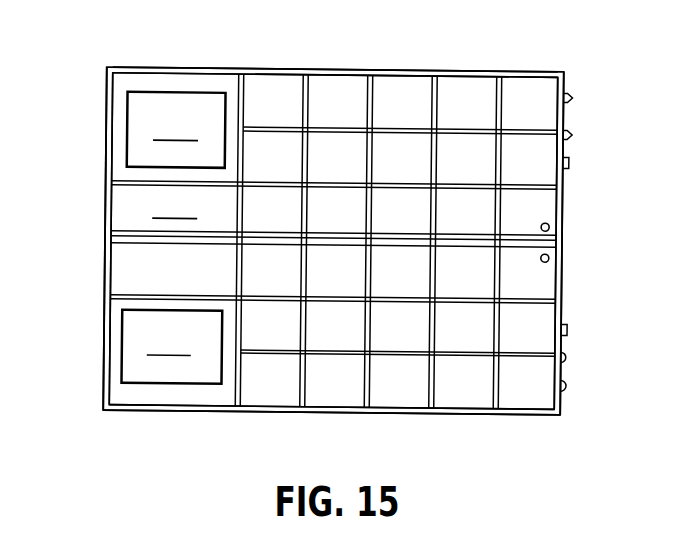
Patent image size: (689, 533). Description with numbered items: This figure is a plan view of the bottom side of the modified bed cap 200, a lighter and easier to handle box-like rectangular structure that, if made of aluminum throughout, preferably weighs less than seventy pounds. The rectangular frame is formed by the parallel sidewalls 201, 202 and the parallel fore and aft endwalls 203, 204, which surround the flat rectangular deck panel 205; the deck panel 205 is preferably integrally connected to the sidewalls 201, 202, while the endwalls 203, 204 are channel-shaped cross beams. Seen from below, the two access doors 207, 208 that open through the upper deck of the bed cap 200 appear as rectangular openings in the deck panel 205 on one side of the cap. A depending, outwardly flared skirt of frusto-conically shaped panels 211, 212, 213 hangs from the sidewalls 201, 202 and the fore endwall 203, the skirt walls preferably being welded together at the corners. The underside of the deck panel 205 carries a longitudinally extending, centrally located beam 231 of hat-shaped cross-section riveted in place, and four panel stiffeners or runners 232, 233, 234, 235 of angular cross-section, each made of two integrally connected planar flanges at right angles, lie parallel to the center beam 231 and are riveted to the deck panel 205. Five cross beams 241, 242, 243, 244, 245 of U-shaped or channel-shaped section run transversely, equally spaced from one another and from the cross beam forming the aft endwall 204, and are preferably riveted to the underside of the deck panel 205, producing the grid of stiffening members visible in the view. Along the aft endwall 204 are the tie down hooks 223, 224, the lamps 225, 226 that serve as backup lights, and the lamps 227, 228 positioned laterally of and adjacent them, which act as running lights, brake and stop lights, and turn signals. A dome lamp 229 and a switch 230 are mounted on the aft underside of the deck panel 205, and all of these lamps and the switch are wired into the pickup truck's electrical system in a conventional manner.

The bed cap 200 is at (298, 69).
The sidewall 201 is at (232, 83).
The sidewall 202 is at (206, 404).
The fore endwall 203 is at (120, 272).
The aft endwall 204 is at (562, 287).
The deck panel 205 is at (174, 206).
The access door 207 is at (176, 130).
The access door 208 is at (171, 347).
The skirt panel 211 is at (425, 68).
The skirt panel 212 is at (422, 409).
The skirt panel 213 is at (108, 212).
The tie down hook 223 is at (569, 158).
The tie down hook 224 is at (568, 327).
The lamp 225 is at (571, 133).
The lamp 226 is at (568, 355).
The lamp 227 is at (571, 96).
The lamp 228 is at (568, 383).
The dome lamp 229 is at (549, 224).
The switch 230 is at (549, 256).
The center beam 231 is at (130, 234).
The panel stiffener 232 is at (330, 134).
The panel stiffener 233 is at (330, 187).
The panel stiffener 234 is at (322, 301).
The panel stiffener 235 is at (326, 354).
The cross beam 241 is at (246, 97).
The cross beam 242 is at (313, 100).
The cross beam 243 is at (374, 100).
The cross beam 244 is at (436, 102).
The cross beam 245 is at (497, 108).